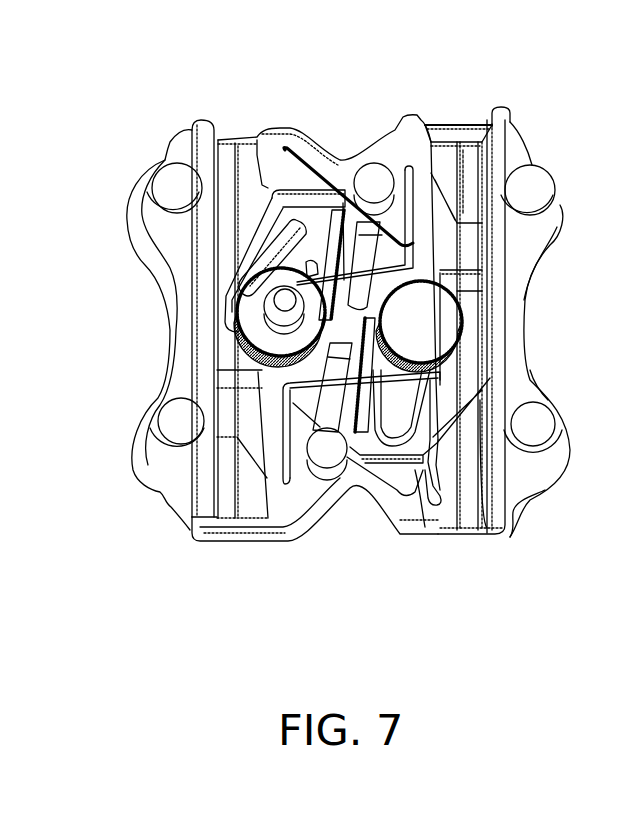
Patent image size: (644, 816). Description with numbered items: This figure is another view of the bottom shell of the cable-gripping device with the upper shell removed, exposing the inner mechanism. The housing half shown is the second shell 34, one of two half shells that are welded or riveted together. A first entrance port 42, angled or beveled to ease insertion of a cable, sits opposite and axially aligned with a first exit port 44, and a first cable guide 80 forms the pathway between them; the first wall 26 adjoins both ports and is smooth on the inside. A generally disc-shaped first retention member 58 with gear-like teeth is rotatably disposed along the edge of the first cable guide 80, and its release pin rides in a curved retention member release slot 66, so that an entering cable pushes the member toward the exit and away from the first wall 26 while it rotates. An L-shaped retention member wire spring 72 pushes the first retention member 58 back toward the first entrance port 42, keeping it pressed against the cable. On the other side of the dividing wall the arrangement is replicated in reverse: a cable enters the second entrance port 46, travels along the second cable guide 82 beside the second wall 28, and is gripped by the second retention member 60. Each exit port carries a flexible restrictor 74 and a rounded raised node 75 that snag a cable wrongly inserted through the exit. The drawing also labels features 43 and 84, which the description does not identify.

The first wall 26 is at (500, 323).
The second wall 28 is at (202, 143).
The second shell 34 is at (527, 247).
The first entrance port 42 is at (477, 122).
The upper tab 43 is at (437, 128).
The first exit port 44 is at (473, 527).
The second entrance port 46 is at (258, 537).
The first retention member 58 is at (423, 327).
The second retention member 60 is at (247, 310).
The retention member release slot 66 is at (397, 412).
The retention member wire spring 72 is at (313, 478).
The restrictor 74 is at (440, 490).
The rounded raised node 75 is at (493, 496).
The first cable guide 80 is at (463, 160).
The second cable guide 82 is at (230, 507).
The bottom wall 84 is at (423, 530).